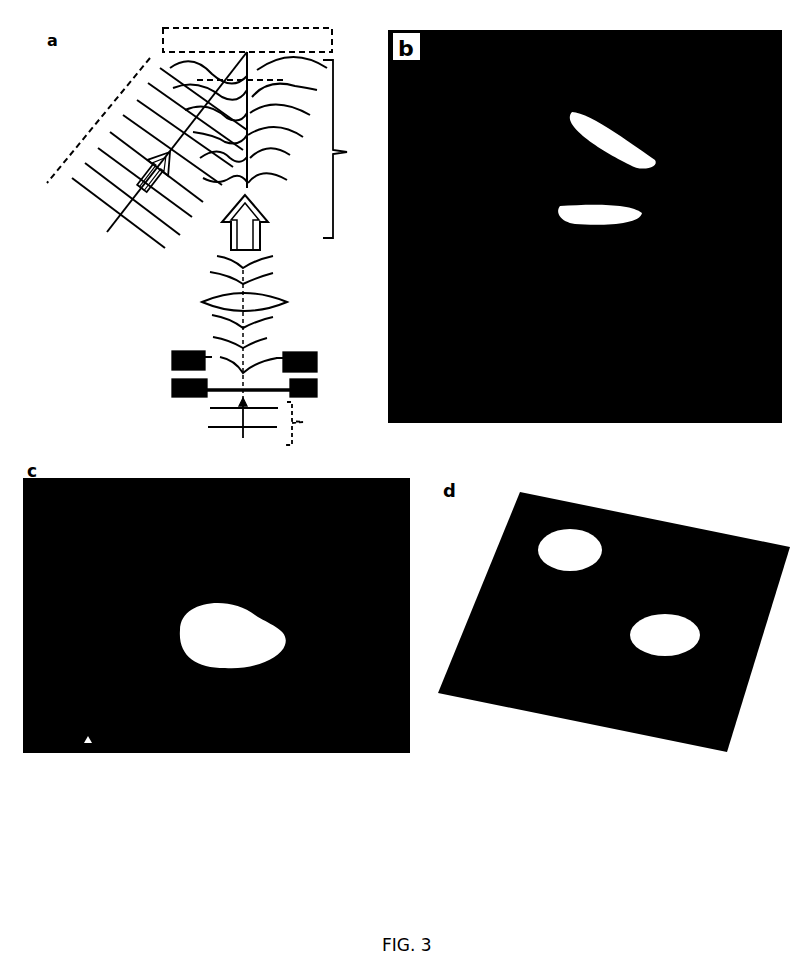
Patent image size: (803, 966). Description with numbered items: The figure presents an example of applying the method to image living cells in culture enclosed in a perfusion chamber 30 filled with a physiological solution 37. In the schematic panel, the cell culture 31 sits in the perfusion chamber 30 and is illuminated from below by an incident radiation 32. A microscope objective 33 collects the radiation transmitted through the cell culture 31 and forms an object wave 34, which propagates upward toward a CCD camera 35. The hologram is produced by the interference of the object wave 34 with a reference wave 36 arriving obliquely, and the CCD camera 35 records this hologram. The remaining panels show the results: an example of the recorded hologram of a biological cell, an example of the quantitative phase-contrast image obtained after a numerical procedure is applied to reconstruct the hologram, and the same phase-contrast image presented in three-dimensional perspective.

The perfusion chamber 30 is at (173, 355).
The cell culture 31 is at (250, 360).
The incident radiation 32 is at (268, 421).
The microscope objective 33 is at (277, 297).
The object wave 34 is at (271, 147).
The CCD camera 35 is at (247, 40).
The reference wave 36 is at (102, 112).
The physiological solution 37 is at (244, 383).